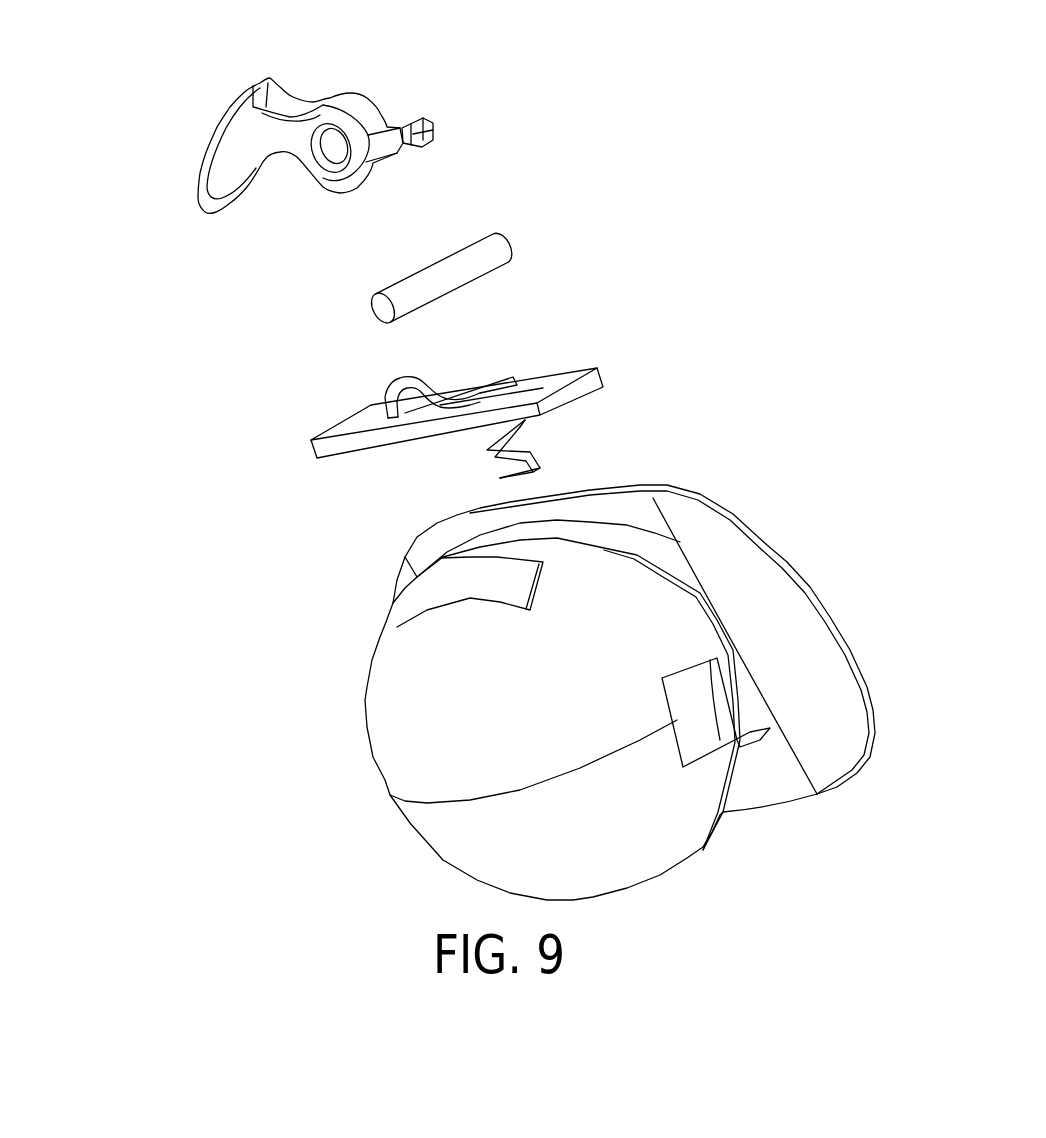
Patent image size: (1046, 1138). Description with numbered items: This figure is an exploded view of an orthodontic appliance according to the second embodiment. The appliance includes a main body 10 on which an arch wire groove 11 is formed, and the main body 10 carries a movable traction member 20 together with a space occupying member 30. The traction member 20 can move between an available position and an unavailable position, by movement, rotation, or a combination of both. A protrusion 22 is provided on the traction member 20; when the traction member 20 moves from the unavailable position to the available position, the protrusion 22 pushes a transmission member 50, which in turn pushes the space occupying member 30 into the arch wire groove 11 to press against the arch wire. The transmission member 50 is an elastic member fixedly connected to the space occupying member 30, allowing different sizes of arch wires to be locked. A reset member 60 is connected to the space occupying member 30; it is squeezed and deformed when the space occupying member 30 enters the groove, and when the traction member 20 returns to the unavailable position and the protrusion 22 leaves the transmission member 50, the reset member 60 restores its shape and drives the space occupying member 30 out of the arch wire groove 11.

The main body 10 is at (620, 612).
The arch wire groove 11 is at (695, 718).
The traction member 20 is at (413, 108).
The protrusion 22 is at (433, 122).
The space occupying member 30 is at (573, 373).
The transmission member 50 is at (386, 397).
The reset member 60 is at (533, 455).